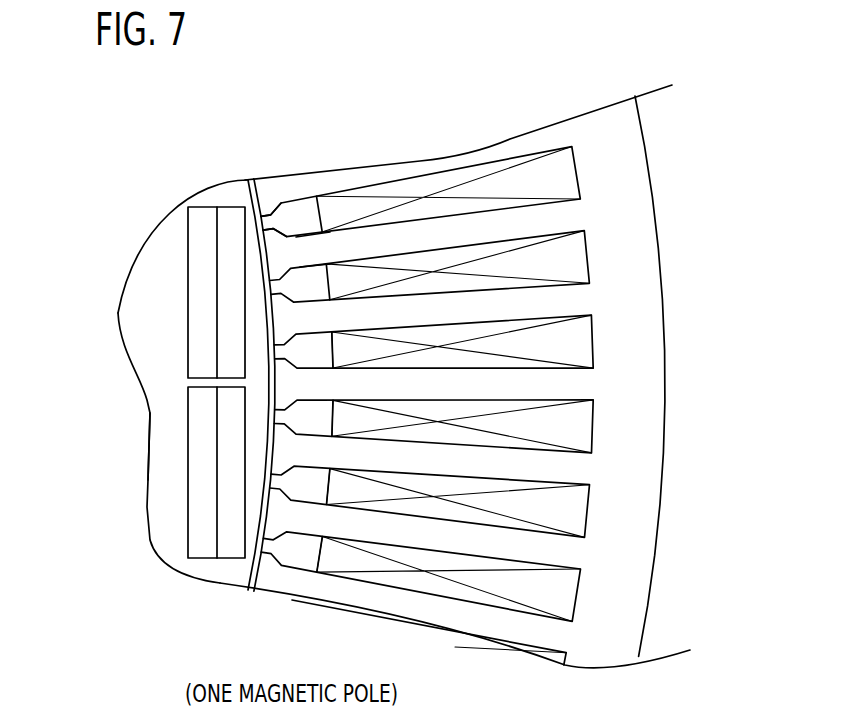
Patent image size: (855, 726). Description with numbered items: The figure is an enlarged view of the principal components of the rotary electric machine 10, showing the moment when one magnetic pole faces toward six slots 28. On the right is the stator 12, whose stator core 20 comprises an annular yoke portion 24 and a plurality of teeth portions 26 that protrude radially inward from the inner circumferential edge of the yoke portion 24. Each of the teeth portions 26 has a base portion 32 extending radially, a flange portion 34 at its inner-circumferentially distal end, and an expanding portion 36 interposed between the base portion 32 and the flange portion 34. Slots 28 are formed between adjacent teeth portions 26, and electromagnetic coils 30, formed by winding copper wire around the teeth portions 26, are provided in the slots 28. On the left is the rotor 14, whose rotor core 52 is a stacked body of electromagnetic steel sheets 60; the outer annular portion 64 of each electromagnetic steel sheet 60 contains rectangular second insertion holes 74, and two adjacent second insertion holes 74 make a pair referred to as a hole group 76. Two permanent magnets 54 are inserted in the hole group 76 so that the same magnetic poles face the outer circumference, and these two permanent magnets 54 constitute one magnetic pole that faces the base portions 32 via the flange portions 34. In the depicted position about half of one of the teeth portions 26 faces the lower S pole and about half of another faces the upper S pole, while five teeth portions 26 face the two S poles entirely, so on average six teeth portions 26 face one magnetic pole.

The rotary electric machine 10 is at (153, 98).
The stator 12 is at (682, 146).
The rotor 14 is at (236, 570).
The stator core 20 is at (678, 349).
The yoke portion 24 is at (622, 308).
The teeth portions 26 is at (344, 127).
The slots 28 is at (542, 200).
The electromagnetic coils 30 is at (477, 177).
The base portion 32 is at (355, 243).
The flange portion 34 is at (272, 214).
The expanding portion 36 is at (285, 231).
The rotor core 52 is at (180, 559).
The permanent magnets 54 is at (232, 350).
The electromagnetic steel sheet 60 is at (150, 547).
The outer annular portion 64 is at (175, 216).
The second insertion holes 74 is at (187, 353).
The hole group 76 is at (85, 365).